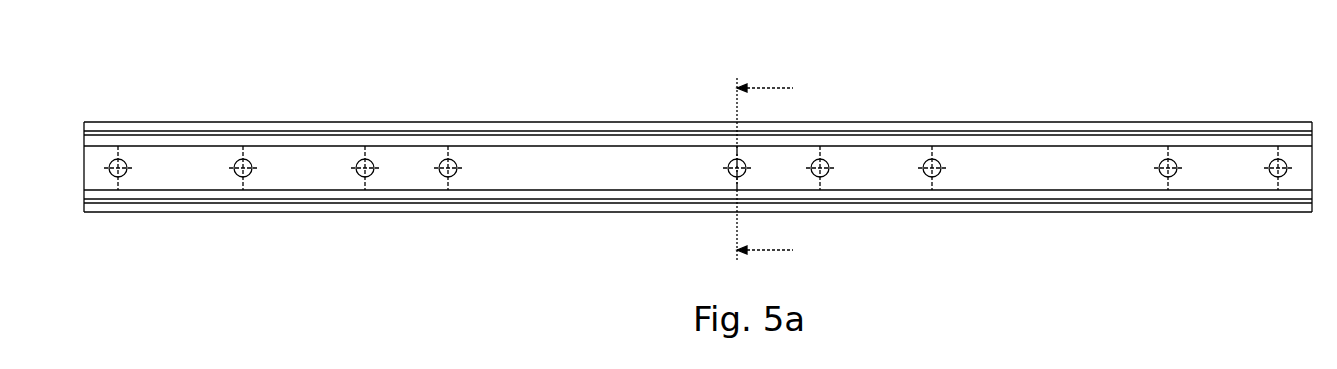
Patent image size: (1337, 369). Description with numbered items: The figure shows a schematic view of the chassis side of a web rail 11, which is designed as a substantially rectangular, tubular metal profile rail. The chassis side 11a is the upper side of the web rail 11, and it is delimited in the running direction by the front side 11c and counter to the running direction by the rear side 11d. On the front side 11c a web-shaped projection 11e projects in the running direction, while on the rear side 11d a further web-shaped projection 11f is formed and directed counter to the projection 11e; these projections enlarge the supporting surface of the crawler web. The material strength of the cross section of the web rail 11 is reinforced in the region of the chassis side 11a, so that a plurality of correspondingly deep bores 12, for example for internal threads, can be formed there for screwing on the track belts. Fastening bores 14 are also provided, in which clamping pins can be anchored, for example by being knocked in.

The web rail 11 is at (698, 167).
The chassis side 11a is at (1078, 183).
The front side 11c is at (1093, 122).
The rear side 11d is at (1102, 212).
The web-shaped projection 11e is at (1020, 131).
The further web-shaped projection 11f is at (1042, 212).
The bores 12 is at (236, 173).
The fastening bores 14 is at (440, 172).